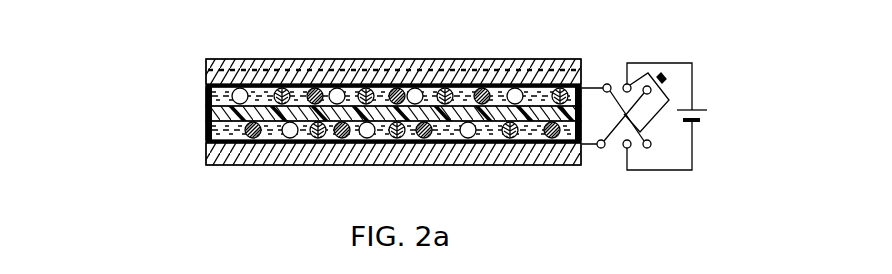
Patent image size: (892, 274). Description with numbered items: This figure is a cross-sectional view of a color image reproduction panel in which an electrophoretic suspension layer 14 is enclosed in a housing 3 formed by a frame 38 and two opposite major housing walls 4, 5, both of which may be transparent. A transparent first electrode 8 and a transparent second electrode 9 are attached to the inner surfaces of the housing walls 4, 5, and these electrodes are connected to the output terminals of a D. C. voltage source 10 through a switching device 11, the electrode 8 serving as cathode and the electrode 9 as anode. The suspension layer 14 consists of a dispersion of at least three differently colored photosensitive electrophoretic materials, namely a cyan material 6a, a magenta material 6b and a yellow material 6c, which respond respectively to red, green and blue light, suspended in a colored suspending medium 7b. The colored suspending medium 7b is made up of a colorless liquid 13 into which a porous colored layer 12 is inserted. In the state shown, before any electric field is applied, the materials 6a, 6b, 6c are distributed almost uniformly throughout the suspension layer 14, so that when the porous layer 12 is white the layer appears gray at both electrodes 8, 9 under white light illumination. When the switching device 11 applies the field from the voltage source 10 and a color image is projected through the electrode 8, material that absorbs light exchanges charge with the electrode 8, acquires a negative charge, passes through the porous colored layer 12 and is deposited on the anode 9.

The housing 3 is at (199, 55).
The major housing wall 4 is at (205, 65).
The major housing wall 5 is at (205, 153).
The first electrode 8 is at (205, 85).
The second electrode 9 is at (205, 140).
The frame 38 is at (205, 100).
The cyan photosensitive electrophoretic material 6a is at (292, 137).
The magenta photosensitive electrophoretic material 6b is at (254, 137).
The yellow photosensitive electrophoretic material 6c is at (320, 137).
The colored suspending medium 7b is at (459, 131).
The porous colored layer 12 is at (439, 122).
The electrophoretic suspension layer 14 is at (450, 130).
The colorless liquid 13 is at (488, 133).
The switching device 11 is at (607, 83).
The D. C. voltage source 10 is at (707, 110).